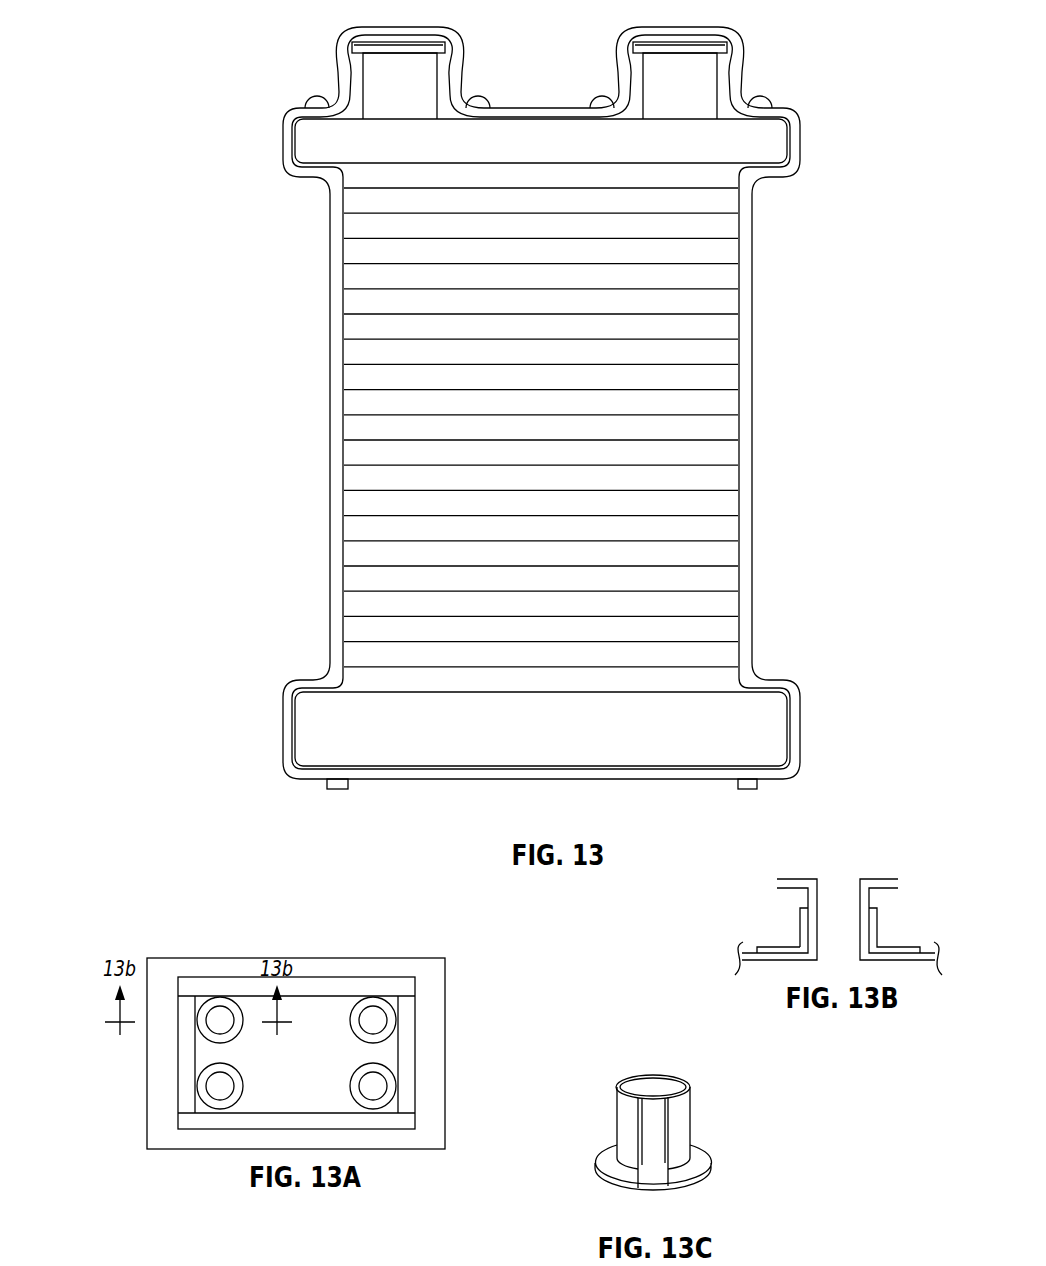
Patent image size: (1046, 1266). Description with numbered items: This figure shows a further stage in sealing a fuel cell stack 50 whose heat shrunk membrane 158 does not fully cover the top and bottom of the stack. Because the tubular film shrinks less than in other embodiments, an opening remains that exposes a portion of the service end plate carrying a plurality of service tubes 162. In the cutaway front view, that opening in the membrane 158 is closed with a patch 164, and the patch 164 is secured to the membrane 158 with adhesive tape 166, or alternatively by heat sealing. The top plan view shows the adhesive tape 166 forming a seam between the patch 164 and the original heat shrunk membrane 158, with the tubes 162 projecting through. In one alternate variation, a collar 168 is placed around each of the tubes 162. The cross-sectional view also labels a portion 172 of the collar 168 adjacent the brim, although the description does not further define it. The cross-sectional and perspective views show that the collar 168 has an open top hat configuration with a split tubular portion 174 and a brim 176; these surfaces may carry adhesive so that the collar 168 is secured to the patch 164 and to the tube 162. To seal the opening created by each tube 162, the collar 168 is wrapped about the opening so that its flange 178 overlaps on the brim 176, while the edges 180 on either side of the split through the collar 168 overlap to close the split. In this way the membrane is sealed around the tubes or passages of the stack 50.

In FIG. 13, the stack 50 is at (710, 432).
In FIG. 13, the membrane 158 is at (753, 490).
In FIG. 13A, the membrane 158 is at (337, 970).
In FIG. 13A, the service tubes 162 is at (382, 1017).
In FIG. 13B, the service tubes 162 is at (885, 868).
In FIG. 13, the patch 164 is at (530, 107).
In FIG. 13, the adhesive tape 166 is at (758, 97).
In FIG. 13A, the adhesive tape 166 is at (192, 987).
In FIG. 13A, the collar 168 is at (203, 1108).
In FIG. 13B, the collar 168 is at (892, 927).
In FIG. 13C, the collar 168 is at (647, 1123).
In FIG. 13B, the grommet flange portion 172 is at (775, 945).
In FIG. 13C, the tubular portion 174 is at (617, 1110).
In FIG. 13C, the brim 176 is at (607, 1165).
In FIG. 13B, the flange 178 is at (800, 925).
In FIG. 13C, the flange 178 is at (647, 1172).
In FIG. 13C, the edges 180 is at (641, 1098).